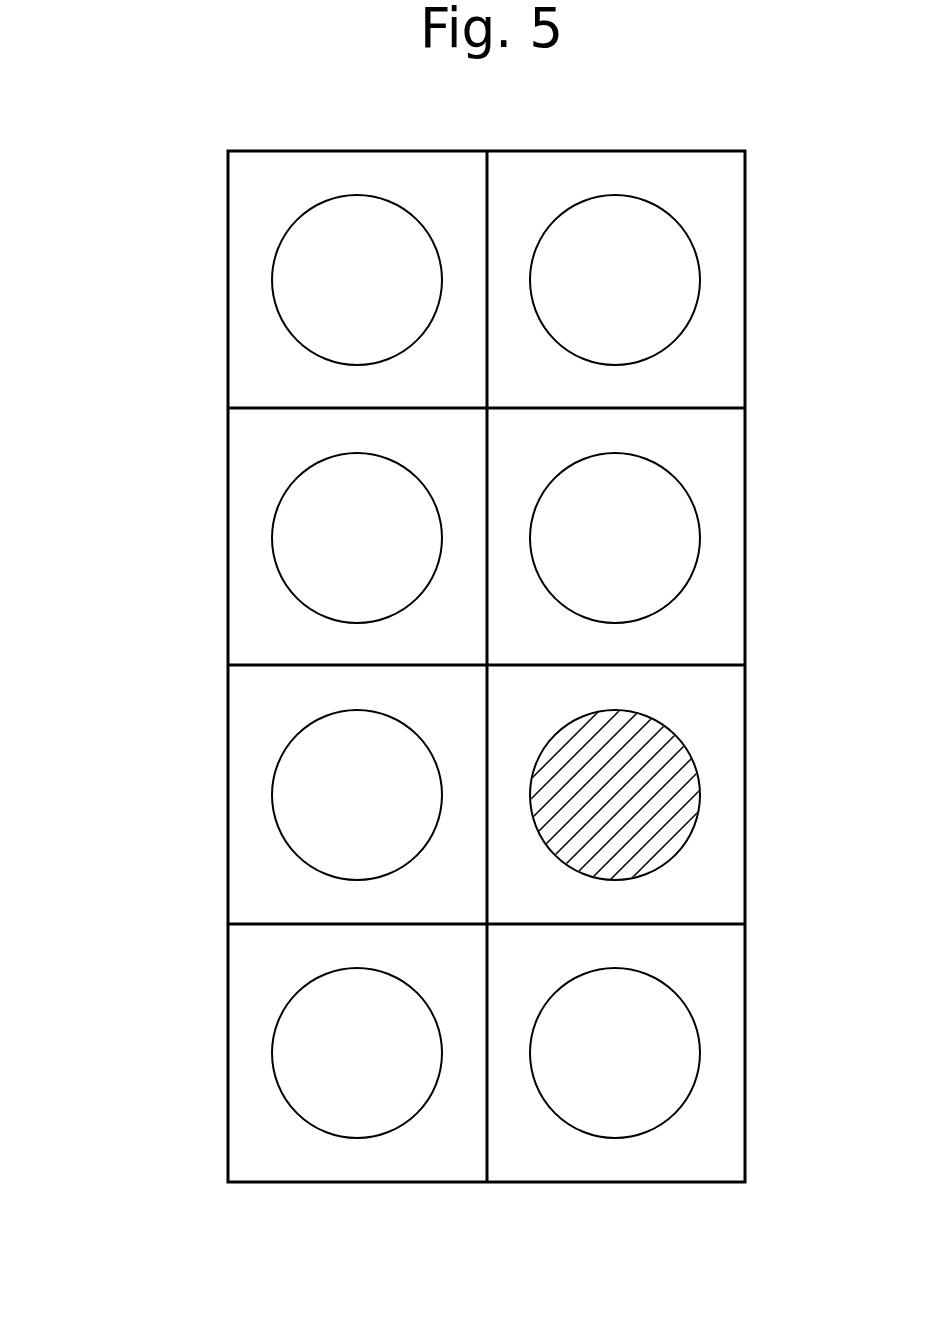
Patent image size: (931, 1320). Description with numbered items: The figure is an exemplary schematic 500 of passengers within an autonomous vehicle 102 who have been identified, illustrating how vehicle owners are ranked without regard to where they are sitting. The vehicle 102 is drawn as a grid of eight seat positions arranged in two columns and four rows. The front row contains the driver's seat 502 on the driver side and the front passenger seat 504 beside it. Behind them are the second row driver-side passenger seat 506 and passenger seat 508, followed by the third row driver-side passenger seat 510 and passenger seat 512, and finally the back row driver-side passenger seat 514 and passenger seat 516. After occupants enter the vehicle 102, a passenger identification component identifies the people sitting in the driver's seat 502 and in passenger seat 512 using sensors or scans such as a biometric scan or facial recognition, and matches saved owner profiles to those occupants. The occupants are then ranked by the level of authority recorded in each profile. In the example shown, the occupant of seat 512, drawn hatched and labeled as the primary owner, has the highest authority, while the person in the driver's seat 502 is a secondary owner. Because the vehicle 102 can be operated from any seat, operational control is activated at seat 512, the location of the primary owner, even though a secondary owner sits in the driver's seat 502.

The schematic 500 is at (138, 153).
The vehicle 102 is at (264, 150).
The driver's seat 502 is at (276, 248).
The front passenger seat 504 is at (697, 247).
The second row driver-side passenger seat 506 is at (276, 506).
The second row passenger seat 508 is at (697, 505).
The third row driver-side passenger seat 510 is at (276, 763).
The third row passenger seat 512 is at (697, 762).
The back row driver-side passenger seat 514 is at (276, 1021).
The back row passenger seat 516 is at (697, 1020).